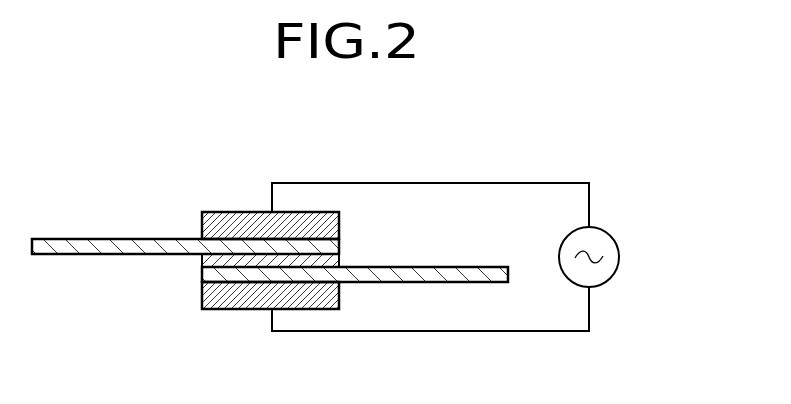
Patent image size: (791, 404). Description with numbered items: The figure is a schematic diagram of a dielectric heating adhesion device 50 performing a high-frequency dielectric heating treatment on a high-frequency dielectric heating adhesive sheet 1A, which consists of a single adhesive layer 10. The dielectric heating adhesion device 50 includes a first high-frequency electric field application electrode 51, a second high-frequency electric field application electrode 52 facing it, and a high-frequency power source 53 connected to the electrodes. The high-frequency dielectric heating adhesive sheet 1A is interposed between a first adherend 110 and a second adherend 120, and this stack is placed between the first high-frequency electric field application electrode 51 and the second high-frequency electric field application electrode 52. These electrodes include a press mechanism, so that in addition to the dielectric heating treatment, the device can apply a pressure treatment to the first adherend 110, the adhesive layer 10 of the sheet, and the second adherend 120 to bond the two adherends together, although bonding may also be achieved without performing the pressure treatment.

The dielectric heating adhesion device 50 is at (638, 132).
The first high-frequency electric field application electrode 51 is at (339, 226).
The second high-frequency electric field application electrode 52 is at (321, 309).
The high-frequency power source 53 is at (618, 266).
The adhesive layer 10 is at (270, 251).
The first adherend 110 is at (112, 238).
The second adherend 120 is at (456, 283).
The high-frequency dielectric heating adhesive sheet 1A is at (358, 256).